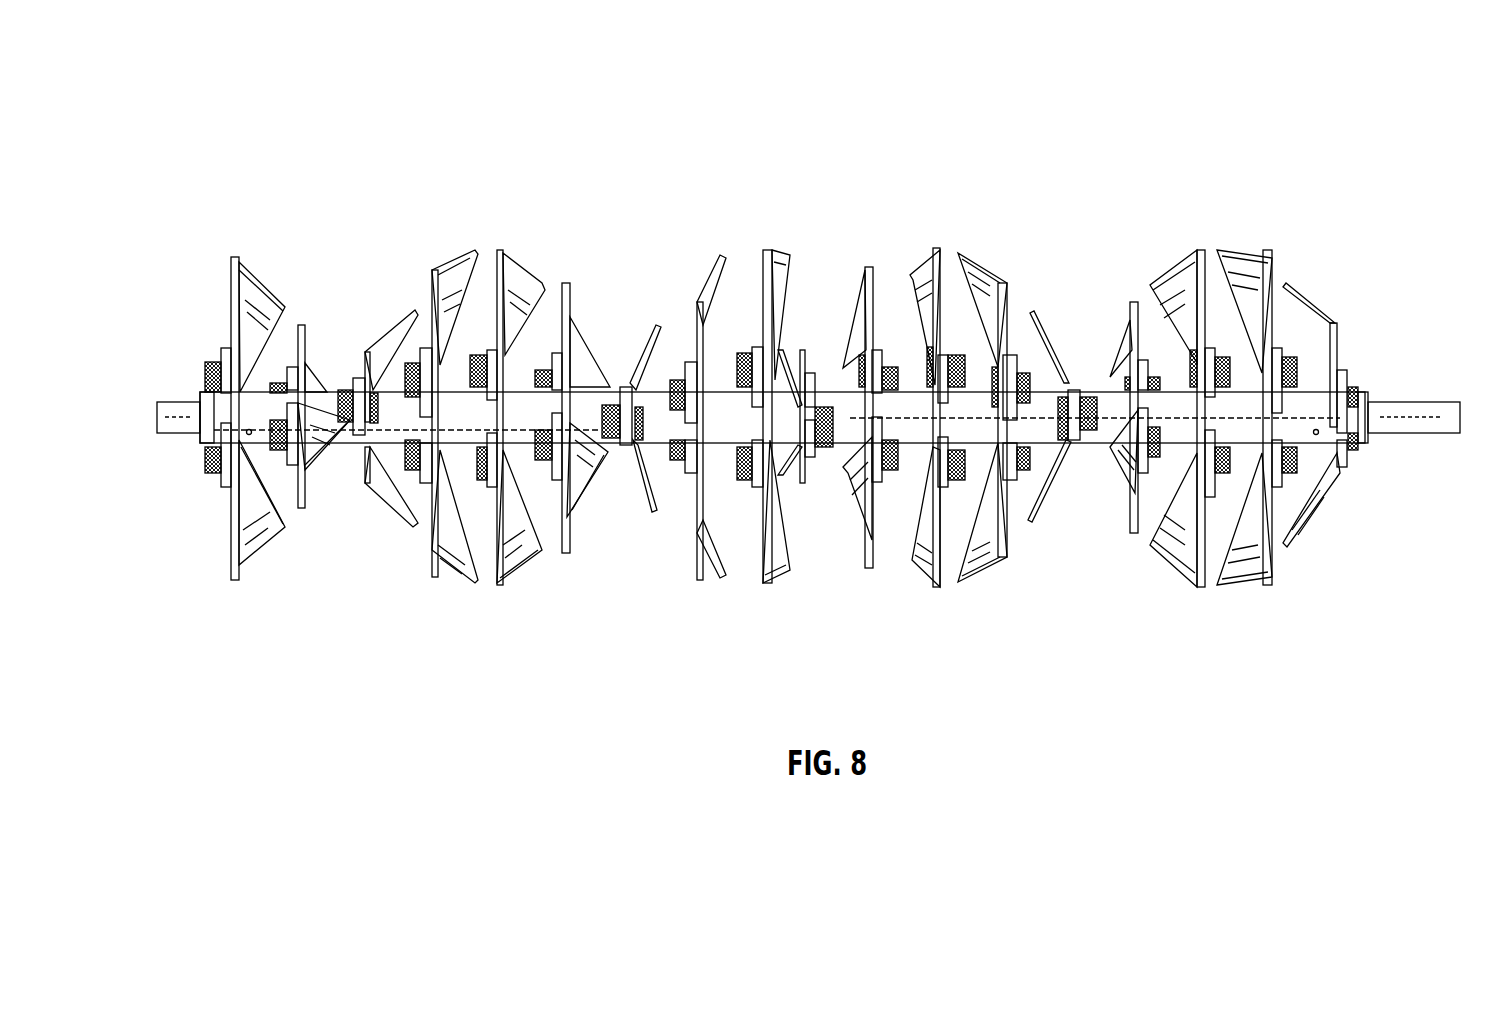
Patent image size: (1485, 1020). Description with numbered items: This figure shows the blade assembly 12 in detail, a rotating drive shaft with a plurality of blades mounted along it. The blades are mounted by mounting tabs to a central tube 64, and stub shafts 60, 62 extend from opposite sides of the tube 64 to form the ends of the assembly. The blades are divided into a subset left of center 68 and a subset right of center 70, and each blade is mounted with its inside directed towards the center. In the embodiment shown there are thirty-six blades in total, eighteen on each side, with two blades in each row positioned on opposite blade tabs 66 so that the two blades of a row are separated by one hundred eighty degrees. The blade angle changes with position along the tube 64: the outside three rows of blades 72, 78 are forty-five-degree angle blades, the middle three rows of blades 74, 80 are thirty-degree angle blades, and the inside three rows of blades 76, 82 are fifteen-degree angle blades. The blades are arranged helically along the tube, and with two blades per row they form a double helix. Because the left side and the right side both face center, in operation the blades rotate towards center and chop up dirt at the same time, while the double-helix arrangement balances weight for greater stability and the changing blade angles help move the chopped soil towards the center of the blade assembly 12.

The blade assembly 12 is at (1408, 130).
The stub shaft 60 is at (157, 420).
The stub shaft 62 is at (1393, 423).
The tube 64 is at (612, 390).
The blade tabs 66 is at (878, 350).
The subset of blades left of center 68 is at (790, 618).
The subset of blades right of center 70 is at (1336, 205).
The outside three rows of blades 72 is at (420, 215).
The middle three rows of blades 74 is at (610, 215).
The inside three rows of blades 76 is at (790, 215).
The outside three rows of blades 78 is at (1335, 597).
The middle three rows of blades 80 is at (1137, 597).
The inside three rows of blades 82 is at (935, 670).